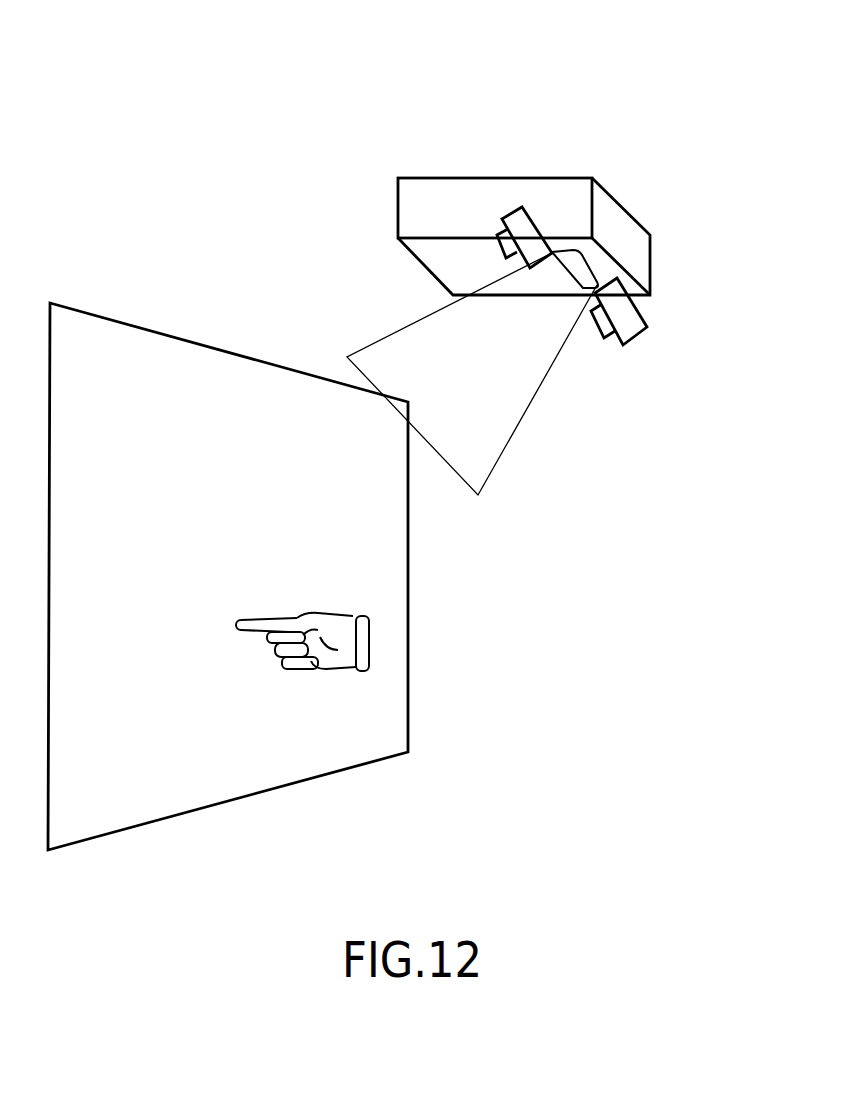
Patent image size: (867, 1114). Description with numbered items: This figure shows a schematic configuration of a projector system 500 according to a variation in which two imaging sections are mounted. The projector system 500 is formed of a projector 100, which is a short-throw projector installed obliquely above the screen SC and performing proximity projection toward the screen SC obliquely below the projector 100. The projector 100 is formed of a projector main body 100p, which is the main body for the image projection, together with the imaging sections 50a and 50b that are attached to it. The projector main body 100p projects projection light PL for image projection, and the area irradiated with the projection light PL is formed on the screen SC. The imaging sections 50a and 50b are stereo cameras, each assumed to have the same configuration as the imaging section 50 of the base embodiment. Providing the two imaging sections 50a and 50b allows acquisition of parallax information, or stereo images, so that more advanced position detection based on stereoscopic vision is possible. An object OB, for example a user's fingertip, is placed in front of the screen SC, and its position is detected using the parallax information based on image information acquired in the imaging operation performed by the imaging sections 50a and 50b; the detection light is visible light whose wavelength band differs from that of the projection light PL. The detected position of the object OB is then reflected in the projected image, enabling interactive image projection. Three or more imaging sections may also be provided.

The projector system 500 is at (409, 99).
The projector 100 is at (498, 164).
The projector main body 100p is at (562, 192).
The imaging section 50 is at (637, 255).
The imaging section 50a is at (630, 313).
The imaging section 50b is at (527, 230).
The screen SC is at (148, 347).
The projection light PL is at (524, 410).
The object OB is at (322, 657).